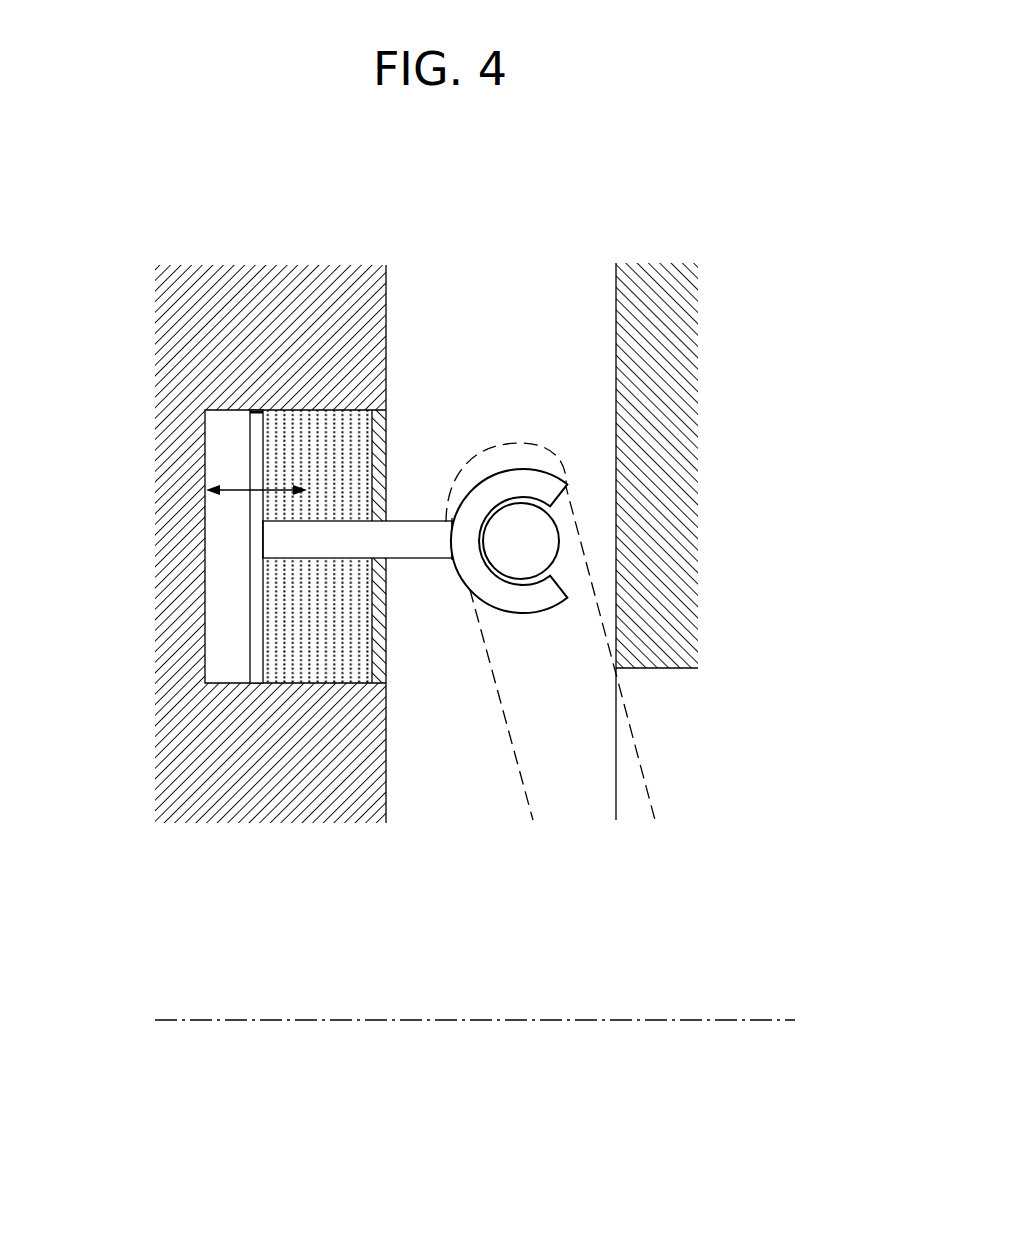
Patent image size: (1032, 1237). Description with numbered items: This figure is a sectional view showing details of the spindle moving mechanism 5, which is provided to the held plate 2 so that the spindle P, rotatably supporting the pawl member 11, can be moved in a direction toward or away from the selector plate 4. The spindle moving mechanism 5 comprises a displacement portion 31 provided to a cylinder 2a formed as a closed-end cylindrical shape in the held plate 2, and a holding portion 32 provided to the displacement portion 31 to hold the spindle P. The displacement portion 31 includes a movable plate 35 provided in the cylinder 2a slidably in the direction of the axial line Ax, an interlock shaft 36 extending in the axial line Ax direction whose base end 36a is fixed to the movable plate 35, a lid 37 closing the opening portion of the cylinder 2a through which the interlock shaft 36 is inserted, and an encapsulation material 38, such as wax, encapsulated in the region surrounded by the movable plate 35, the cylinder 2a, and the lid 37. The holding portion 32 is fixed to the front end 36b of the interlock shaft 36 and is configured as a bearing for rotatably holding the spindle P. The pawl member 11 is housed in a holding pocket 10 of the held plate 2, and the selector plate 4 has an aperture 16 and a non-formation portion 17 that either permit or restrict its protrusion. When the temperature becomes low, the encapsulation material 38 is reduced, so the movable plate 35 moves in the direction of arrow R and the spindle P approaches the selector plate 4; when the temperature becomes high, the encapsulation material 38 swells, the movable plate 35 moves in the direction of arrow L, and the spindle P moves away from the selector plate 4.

The held plate 2 is at (197, 283).
The cylinder 2a is at (205, 632).
The selector plate 4 is at (653, 265).
The spindle moving mechanism 5 is at (456, 400).
The holding pocket 10 is at (554, 424).
The pawl member 11 is at (503, 716).
The aperture 16 is at (655, 668).
The non-formation portion 17 is at (655, 483).
The displacement portion 31 is at (399, 688).
The holding portion 32 is at (505, 483).
The movable plate 35 is at (255, 410).
The interlock shaft 36 is at (395, 525).
The base end 36a is at (273, 545).
The front end 36b is at (447, 560).
The lid 37 is at (385, 360).
The encapsulation material 38 is at (303, 432).
The spindle P is at (523, 535).
The arrow L is at (231, 474).
The arrow R is at (281, 474).
The axial line Ax is at (172, 1020).